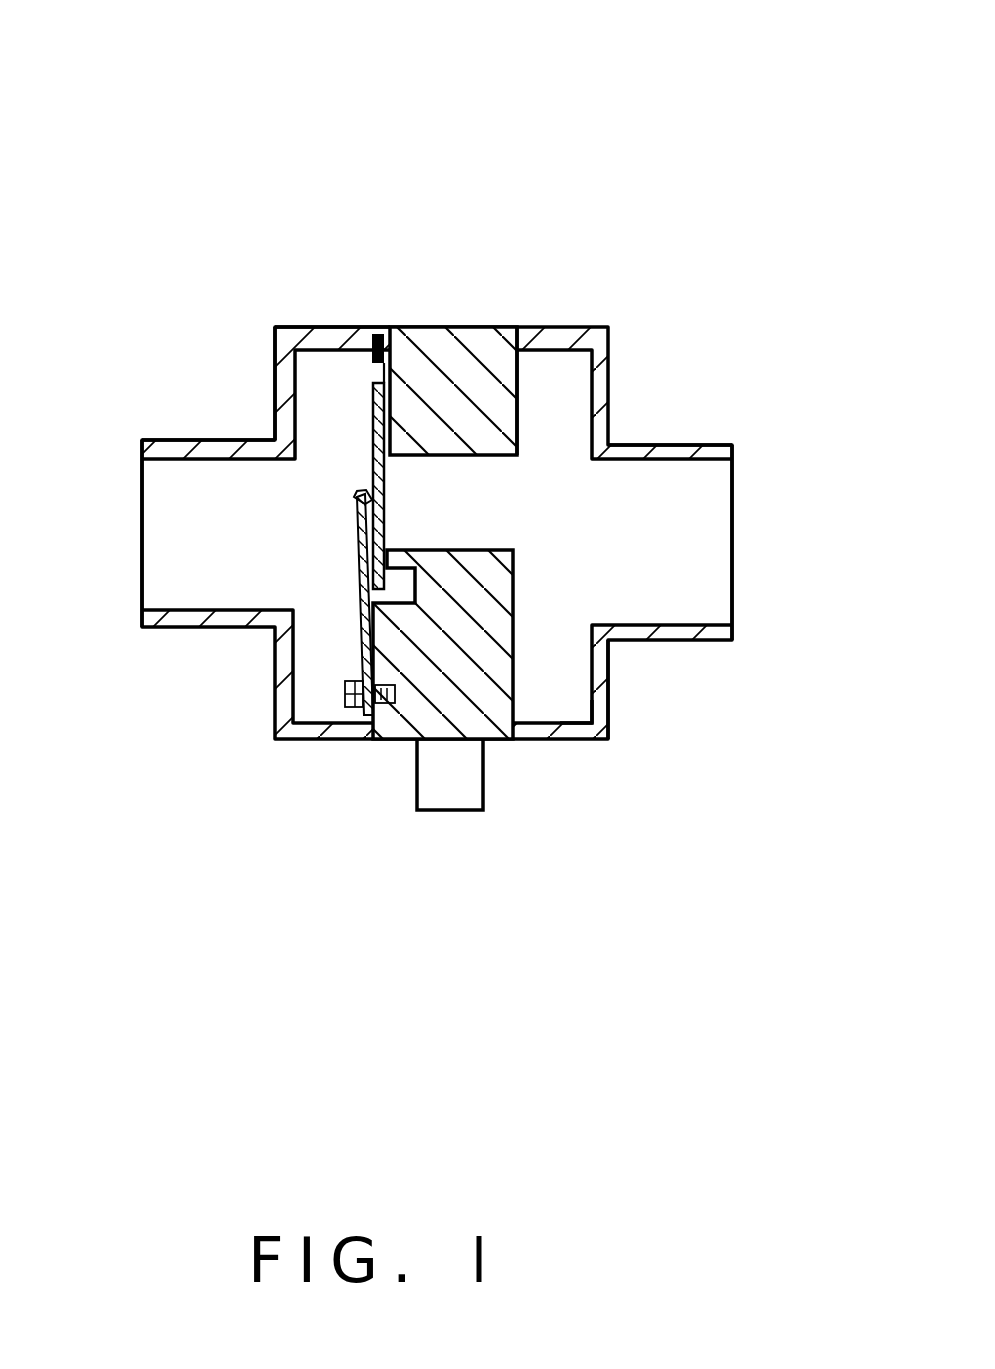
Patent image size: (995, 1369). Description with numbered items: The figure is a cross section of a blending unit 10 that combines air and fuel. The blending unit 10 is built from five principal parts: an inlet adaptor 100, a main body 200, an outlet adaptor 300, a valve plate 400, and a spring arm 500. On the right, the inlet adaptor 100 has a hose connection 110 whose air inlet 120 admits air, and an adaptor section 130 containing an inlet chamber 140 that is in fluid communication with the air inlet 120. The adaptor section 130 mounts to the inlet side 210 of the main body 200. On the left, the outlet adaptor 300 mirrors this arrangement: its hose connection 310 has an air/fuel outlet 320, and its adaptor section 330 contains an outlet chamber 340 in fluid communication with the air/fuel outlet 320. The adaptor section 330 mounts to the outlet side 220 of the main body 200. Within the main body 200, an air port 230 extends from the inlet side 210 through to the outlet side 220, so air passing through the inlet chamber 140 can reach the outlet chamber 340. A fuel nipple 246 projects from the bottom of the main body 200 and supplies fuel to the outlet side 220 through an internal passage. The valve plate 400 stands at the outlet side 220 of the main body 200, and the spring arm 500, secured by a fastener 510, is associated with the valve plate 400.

The blending unit 10 is at (787, 15).
The inlet adaptor 100 is at (586, 327).
The hose connection 110 is at (716, 445).
The air inlet 120 is at (706, 493).
The adaptor section 130 is at (610, 673).
The inlet chamber 140 is at (592, 722).
The main body 200 is at (423, 327).
The inlet side 210 is at (514, 390).
The outlet side 220 is at (388, 368).
The air port 230 is at (493, 493).
The fuel nipple 246 is at (483, 810).
The outlet adaptor 300 is at (297, 327).
The hose connection 310 is at (163, 440).
The air/fuel outlet 320 is at (158, 490).
The adaptor section 330 is at (273, 355).
The outlet chamber 340 is at (313, 420).
The valve plate 400 is at (373, 472).
The spring arm 500 is at (360, 630).
The fastening bolt 510 is at (343, 700).